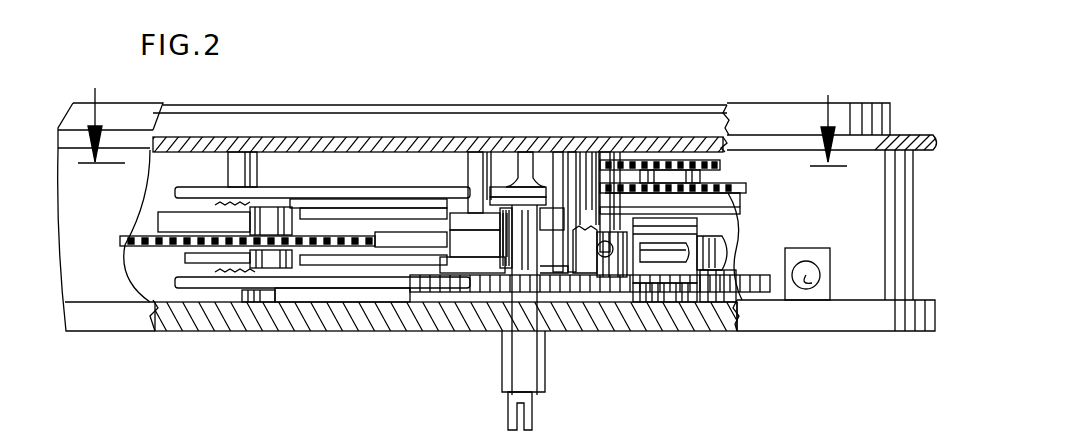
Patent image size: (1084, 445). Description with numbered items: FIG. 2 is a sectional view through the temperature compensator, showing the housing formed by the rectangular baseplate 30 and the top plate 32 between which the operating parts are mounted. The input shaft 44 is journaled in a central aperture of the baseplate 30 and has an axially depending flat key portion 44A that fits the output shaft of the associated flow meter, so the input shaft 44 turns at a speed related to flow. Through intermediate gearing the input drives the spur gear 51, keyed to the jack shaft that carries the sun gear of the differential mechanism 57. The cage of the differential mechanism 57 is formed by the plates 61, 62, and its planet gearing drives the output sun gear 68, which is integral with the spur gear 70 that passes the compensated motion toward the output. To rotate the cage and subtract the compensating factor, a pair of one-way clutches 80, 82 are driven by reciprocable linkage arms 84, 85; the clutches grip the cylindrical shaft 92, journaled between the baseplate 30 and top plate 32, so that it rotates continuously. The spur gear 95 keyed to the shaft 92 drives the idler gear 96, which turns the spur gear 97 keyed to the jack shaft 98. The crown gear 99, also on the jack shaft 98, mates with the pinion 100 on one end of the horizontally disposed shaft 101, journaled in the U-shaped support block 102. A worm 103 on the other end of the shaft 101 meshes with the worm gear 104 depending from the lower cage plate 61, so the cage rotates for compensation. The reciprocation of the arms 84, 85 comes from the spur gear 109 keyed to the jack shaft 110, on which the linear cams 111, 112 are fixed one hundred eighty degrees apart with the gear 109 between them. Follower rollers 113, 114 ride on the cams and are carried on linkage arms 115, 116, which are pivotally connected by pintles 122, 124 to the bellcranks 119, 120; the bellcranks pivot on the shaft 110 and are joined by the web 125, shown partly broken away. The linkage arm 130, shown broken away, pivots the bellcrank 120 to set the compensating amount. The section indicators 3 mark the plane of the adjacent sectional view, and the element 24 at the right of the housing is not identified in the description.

The section line 3- 3 is at (468, 116).
The bearing 24 is at (822, 250).
The baseplate 30 is at (174, 334).
The top plate 32 is at (330, 140).
The input shaft 44 is at (533, 362).
The flat key portion 44A is at (505, 410).
The spur gear 51 is at (739, 300).
The differential mechanism 57 is at (720, 190).
The lower cage plate 61 is at (720, 220).
The upper cage plate 62 is at (668, 183).
The output sun gear 68 is at (680, 160).
The spur gear 70 is at (623, 172).
The one-way clutch 80 is at (452, 210).
The one-way clutch 82 is at (476, 328).
The linkage arm 84 is at (385, 232).
The linkage arm 85 is at (374, 326).
The cylindrical shaft 92 is at (480, 136).
The spur gear 95 is at (490, 300).
The idler gear 96 is at (592, 334).
The spur gear 97 is at (600, 334).
The jack shaft 98 is at (595, 155).
The crown gear 99 is at (590, 155).
The pinion 100 is at (626, 318).
The horizontally disposed shaft 101 is at (692, 322).
The U-shaped support block 102 is at (718, 330).
The worm 103 is at (700, 257).
The worm gear 104 is at (661, 325).
The spur gear 109 is at (135, 242).
The jack shaft 110 is at (228, 163).
The linear cam 111 is at (190, 250).
The linear cam 112 is at (158, 224).
The follower roller 113 is at (288, 330).
The follower roller 114 is at (268, 204).
The linkage arm 115 is at (317, 330).
The linkage arm 116 is at (355, 222).
The bellcrank 119 is at (341, 330).
The bellcrank 120 is at (308, 203).
The pintle 122 is at (537, 274).
The pintle 124 is at (540, 150).
The web 125 is at (152, 206).
The linkage arm 130 is at (556, 148).